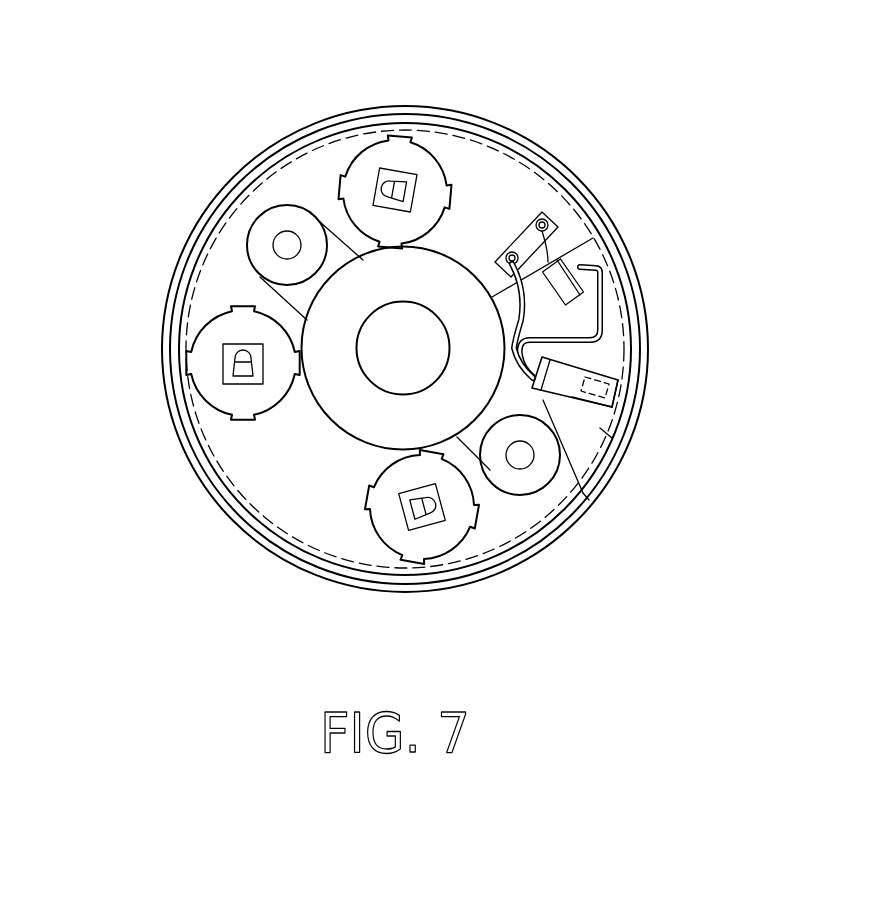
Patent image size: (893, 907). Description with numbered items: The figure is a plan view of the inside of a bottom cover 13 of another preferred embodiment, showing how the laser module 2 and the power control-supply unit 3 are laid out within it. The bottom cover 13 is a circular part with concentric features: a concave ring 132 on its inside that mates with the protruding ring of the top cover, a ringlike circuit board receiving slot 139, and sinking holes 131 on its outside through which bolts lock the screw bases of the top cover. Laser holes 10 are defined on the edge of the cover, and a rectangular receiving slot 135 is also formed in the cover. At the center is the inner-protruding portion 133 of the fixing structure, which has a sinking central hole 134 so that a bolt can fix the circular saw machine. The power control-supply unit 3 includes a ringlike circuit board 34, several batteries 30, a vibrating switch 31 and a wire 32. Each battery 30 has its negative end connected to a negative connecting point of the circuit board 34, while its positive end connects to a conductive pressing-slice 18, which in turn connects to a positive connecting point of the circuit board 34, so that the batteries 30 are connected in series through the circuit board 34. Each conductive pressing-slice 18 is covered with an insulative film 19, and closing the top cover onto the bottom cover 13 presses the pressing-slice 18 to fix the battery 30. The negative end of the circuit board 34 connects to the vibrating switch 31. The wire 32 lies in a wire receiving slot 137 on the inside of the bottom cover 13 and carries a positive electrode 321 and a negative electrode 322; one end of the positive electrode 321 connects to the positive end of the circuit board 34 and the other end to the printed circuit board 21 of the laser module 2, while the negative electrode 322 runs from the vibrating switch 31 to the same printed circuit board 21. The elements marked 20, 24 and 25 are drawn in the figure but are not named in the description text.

The laser module 2 is at (627, 367).
The power control-supply unit 3 is at (610, 205).
The laser holes 10 is at (612, 408).
The bottom cover 13 is at (207, 498).
The conductive pressing-slice 18 is at (400, 153).
The insulative film 19 is at (333, 557).
The switch contact 20 is at (615, 397).
The printed circuit board 21 is at (538, 390).
The partition 24 is at (567, 400).
The slot 25 is at (605, 432).
The battery 30 is at (432, 165).
The vibrating switch 31 is at (575, 240).
The wire 32 is at (617, 317).
The ringlike circuit board 34 is at (520, 170).
The sinking holes 131 is at (520, 458).
The concave ring 132 is at (282, 553).
The inner-protruding portion 133 is at (333, 400).
The sinking central hole 134 is at (380, 332).
The rectangular receiving slot 135 is at (598, 422).
The wire receiving slot 137 is at (622, 342).
The ringlike circuit board receiving slot 139 is at (325, 140).
The positive electrode 321 is at (605, 357).
The negative electrode 322 is at (570, 317).